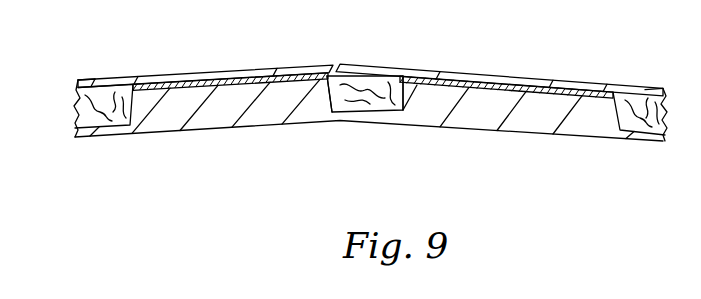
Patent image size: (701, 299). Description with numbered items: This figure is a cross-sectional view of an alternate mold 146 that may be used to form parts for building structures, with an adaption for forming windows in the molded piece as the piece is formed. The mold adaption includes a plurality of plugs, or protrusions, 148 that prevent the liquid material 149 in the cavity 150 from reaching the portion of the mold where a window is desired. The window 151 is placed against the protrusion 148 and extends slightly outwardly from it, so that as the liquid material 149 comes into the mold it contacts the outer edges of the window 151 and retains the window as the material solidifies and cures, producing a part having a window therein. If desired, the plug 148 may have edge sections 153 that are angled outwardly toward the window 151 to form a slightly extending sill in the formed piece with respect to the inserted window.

The alternate mold 146 is at (533, 75).
The plug 148 is at (238, 114).
The liquid material 149 is at (104, 80).
The cavity 150 is at (118, 120).
The window 151 is at (255, 77).
The edge section 153 is at (408, 90).